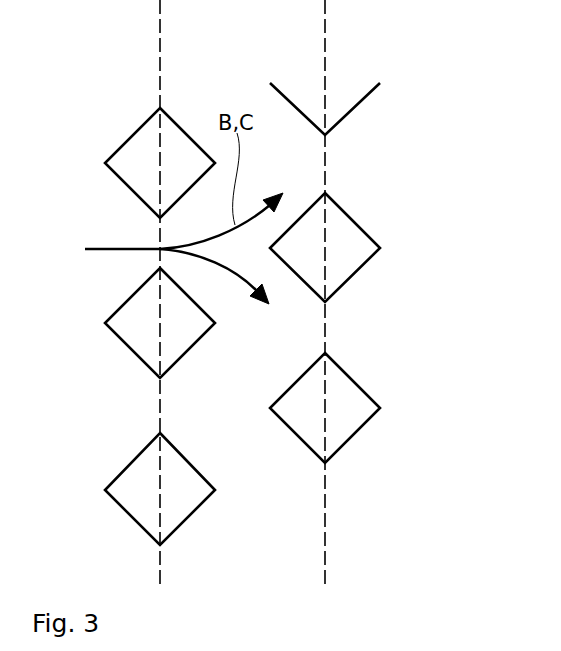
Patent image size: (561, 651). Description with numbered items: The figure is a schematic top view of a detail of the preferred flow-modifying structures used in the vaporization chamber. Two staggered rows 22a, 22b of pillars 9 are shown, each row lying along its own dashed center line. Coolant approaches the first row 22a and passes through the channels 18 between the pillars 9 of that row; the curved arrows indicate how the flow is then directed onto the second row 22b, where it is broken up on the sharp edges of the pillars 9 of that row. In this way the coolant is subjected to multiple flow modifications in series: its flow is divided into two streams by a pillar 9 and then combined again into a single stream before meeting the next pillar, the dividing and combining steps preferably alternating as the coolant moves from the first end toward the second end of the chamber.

The first row of pillars 22a is at (160, 15).
The second row of pillars 22b is at (325, 15).
The pillar 9 is at (185, 355).
The channel 18 is at (100, 243).